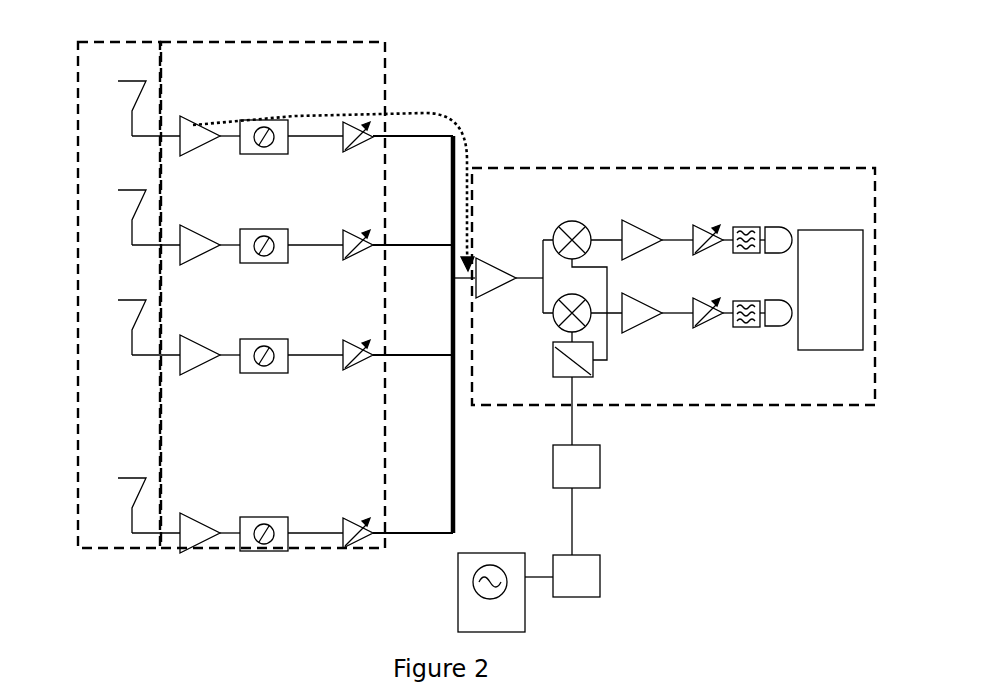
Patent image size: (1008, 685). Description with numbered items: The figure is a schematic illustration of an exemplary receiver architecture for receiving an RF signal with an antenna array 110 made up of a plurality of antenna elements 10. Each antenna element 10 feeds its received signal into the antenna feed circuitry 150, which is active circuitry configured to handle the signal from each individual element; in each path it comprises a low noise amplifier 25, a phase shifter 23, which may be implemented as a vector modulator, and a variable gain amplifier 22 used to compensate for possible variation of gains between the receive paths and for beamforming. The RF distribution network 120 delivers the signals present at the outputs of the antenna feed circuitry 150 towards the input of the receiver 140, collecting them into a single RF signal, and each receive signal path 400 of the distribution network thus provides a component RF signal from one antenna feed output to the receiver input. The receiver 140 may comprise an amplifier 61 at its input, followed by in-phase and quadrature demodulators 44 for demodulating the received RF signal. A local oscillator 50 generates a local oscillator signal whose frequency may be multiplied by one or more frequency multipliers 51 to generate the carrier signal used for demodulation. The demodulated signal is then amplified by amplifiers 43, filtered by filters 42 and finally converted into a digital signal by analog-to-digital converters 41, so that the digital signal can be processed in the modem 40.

The antenna array 110 is at (105, 63).
The antenna feed circuitry 150 is at (235, 63).
The antenna element 10 is at (130, 95).
The low noise amplifier 25 is at (192, 125).
The phase shifter 23 is at (280, 119).
The variable gain amplifier 22 is at (350, 125).
The RF distribution network 120 is at (421, 133).
The receive signal path 400 is at (458, 128).
The receiver 140 is at (652, 170).
The amplifier 61 is at (480, 268).
The in-phase and quadrature demodulator 44 is at (567, 223).
The amplifier 43 is at (628, 228).
The filter 42 is at (747, 229).
The analog-to-digital converter 41 is at (780, 229).
The modem 40 is at (830, 231).
The frequency multiplier 51 is at (584, 461).
The local oscillator 50 is at (465, 599).